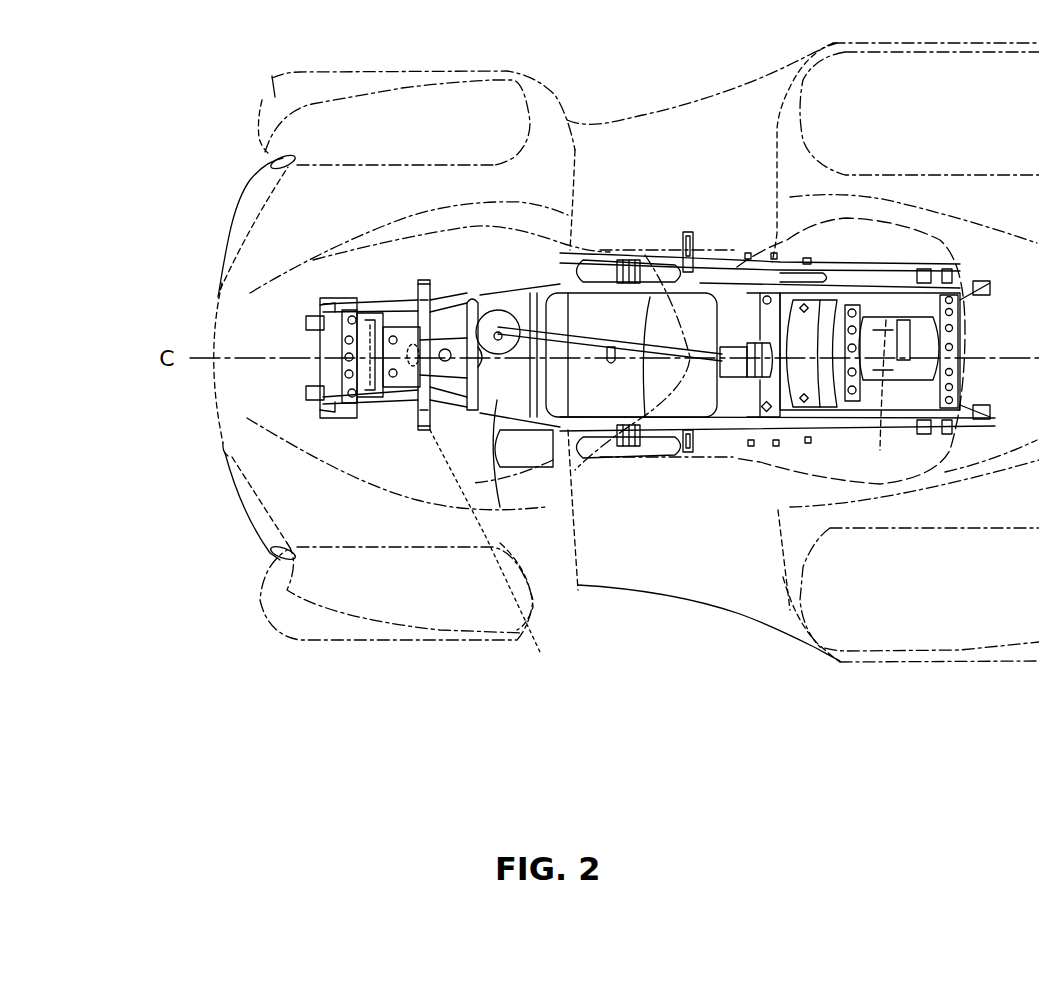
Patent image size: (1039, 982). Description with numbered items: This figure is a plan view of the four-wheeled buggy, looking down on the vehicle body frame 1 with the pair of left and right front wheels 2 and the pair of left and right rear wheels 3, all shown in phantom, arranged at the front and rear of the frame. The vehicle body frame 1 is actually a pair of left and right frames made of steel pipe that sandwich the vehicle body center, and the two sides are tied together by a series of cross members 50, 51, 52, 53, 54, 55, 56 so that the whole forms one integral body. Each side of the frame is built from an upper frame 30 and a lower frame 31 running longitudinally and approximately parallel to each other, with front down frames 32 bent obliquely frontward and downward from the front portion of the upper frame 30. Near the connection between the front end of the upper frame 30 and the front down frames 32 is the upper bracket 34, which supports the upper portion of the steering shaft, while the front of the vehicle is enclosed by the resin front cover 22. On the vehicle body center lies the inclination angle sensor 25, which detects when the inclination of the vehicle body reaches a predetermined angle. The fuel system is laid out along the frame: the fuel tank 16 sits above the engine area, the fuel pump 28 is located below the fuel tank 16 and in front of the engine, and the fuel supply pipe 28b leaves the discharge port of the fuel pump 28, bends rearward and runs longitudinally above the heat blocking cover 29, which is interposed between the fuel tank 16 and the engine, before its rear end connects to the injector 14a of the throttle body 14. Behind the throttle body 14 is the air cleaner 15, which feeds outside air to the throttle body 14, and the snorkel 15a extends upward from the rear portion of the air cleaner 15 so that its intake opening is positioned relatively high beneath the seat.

The vehicle body frame 1 is at (357, 294).
The front wheels 2 is at (272, 72).
The rear wheels 3 is at (830, 43).
The throttle body 14 is at (738, 420).
The injector 14a is at (721, 292).
The air cleaner 15 is at (820, 400).
The snorkel 15a is at (886, 320).
The fuel tank 16 is at (478, 235).
The front cover 22 is at (218, 290).
The inclination angle sensor 25 is at (523, 620).
The fuel pump 28 is at (497, 282).
The fuel supply pipe 28b is at (574, 186).
The heat blocking cover 29 is at (668, 267).
The upper frame 30 is at (597, 260).
The lower frame 31 is at (735, 272).
The front down frames 32 is at (425, 262).
The upper bracket 34 is at (478, 503).
The cross member 50 is at (320, 350).
The cross member 51 is at (393, 400).
The cross member 52 is at (436, 422).
The cross member 53 is at (500, 405).
The cross member 54 is at (747, 445).
The cross member 55 is at (862, 395).
The cross member 56 is at (960, 352).